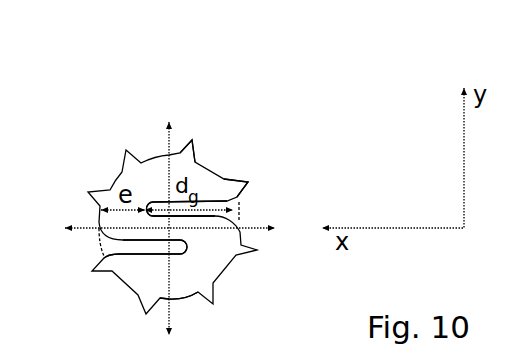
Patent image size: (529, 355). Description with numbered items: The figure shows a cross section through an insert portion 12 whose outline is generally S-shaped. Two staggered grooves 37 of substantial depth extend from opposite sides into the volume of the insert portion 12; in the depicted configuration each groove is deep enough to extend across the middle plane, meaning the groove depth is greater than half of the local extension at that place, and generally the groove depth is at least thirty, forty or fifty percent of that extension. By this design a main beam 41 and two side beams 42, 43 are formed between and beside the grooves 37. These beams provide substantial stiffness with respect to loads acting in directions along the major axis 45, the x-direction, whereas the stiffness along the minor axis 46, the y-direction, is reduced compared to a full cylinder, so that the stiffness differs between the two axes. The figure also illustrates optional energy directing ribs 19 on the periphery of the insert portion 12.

The insert portion 12 is at (142, 160).
The energy directing ribs 19 is at (196, 156).
The side beam 42 is at (204, 181).
The grooves 37 is at (132, 242).
The main beam 41 is at (187, 221).
The side beam 43 is at (180, 270).
The major axis 45 is at (82, 226).
The minor axis 46 is at (172, 137).